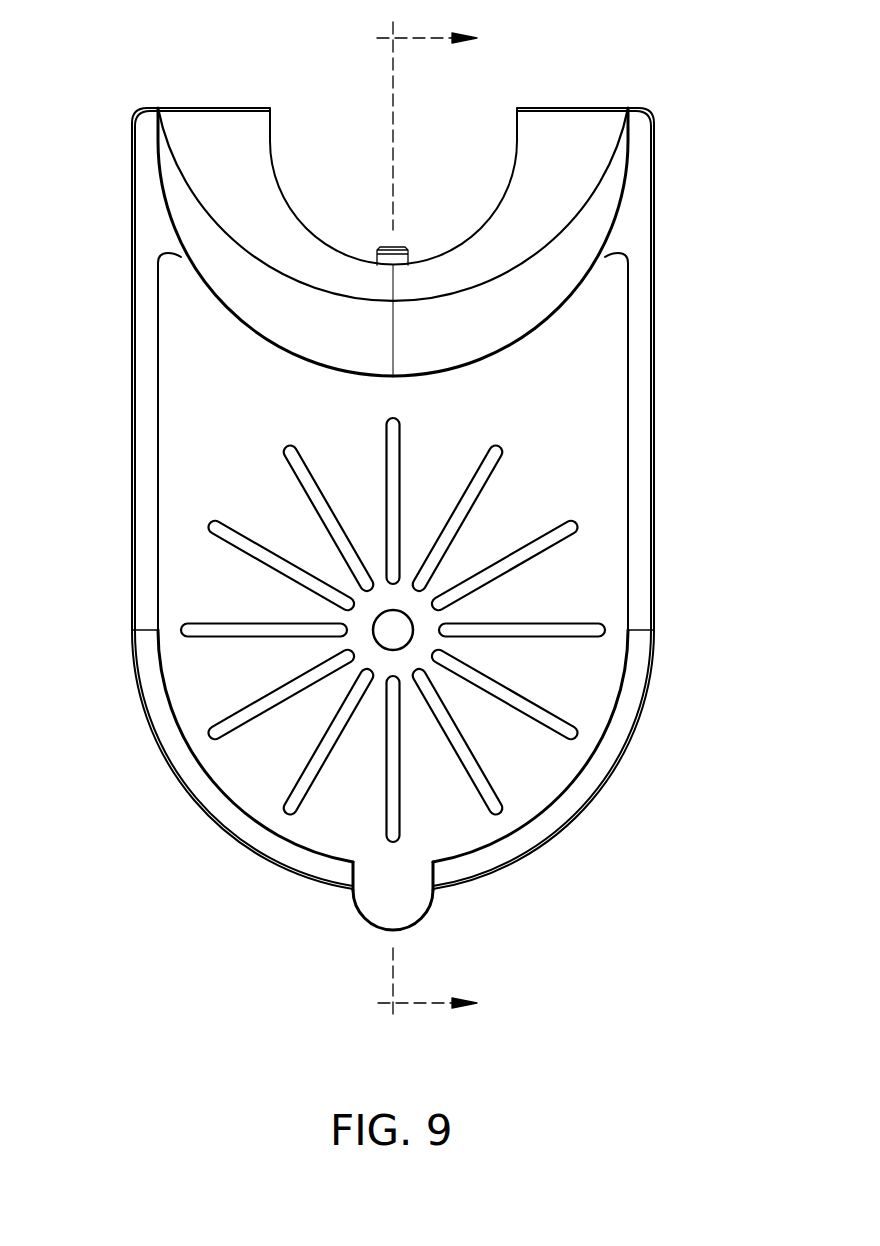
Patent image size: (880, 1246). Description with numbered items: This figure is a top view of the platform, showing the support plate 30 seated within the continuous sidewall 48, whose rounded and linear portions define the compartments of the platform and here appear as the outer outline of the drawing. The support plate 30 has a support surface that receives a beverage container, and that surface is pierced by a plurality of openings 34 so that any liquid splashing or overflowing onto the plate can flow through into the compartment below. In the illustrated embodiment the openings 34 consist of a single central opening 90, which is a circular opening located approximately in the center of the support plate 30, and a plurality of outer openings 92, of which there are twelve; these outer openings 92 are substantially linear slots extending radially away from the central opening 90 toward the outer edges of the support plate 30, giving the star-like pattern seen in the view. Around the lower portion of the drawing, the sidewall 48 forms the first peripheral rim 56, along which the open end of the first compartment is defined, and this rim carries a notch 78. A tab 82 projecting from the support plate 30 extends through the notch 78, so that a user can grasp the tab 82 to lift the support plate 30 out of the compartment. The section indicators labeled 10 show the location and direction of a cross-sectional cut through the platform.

The section line 10- 10 is at (416, 522).
The continuous sidewall 48 is at (132, 280).
The support plate 30 is at (590, 371).
The openings 34 is at (540, 548).
The central opening 90 is at (417, 623).
The outer openings 92 is at (524, 707).
The first peripheral rim 56 is at (560, 810).
The notch 78 is at (352, 881).
The tab 82 is at (420, 912).